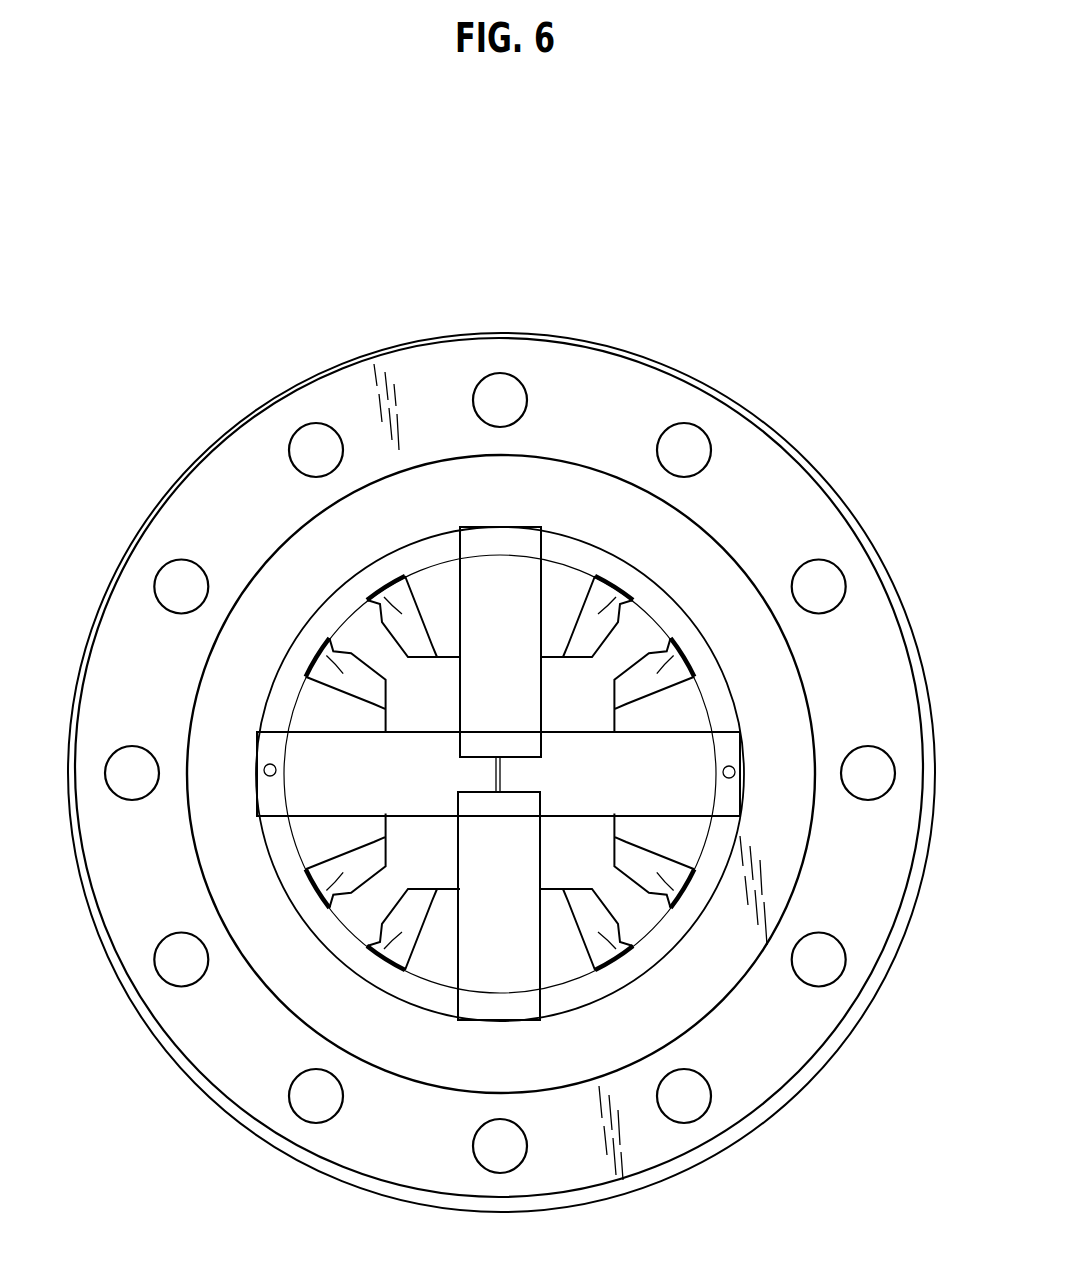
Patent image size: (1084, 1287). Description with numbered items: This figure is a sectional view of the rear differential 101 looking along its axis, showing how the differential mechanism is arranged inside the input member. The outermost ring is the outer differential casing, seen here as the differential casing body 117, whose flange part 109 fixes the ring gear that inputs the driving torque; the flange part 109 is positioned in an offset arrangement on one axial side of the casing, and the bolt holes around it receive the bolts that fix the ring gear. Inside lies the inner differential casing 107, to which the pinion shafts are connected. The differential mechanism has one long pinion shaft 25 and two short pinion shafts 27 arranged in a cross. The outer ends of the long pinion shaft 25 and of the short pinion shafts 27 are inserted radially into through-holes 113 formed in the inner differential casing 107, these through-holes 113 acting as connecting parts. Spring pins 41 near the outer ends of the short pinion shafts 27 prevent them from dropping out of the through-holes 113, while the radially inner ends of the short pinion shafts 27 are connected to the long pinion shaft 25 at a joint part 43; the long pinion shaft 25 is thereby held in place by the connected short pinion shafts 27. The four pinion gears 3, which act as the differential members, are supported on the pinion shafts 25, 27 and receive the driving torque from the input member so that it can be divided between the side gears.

The rear differential 101 is at (740, 192).
The inner differential casing 107 is at (673, 588).
The differential casing body 117 is at (572, 450).
The flange part 109 is at (767, 497).
The pinion gears 3 is at (343, 663).
The long pinion shaft 25 is at (482, 696).
The short pinion shafts 27 is at (387, 794).
The spring pins 41 is at (265, 765).
The joint part 43 is at (528, 800).
The through-holes 113 is at (463, 543).